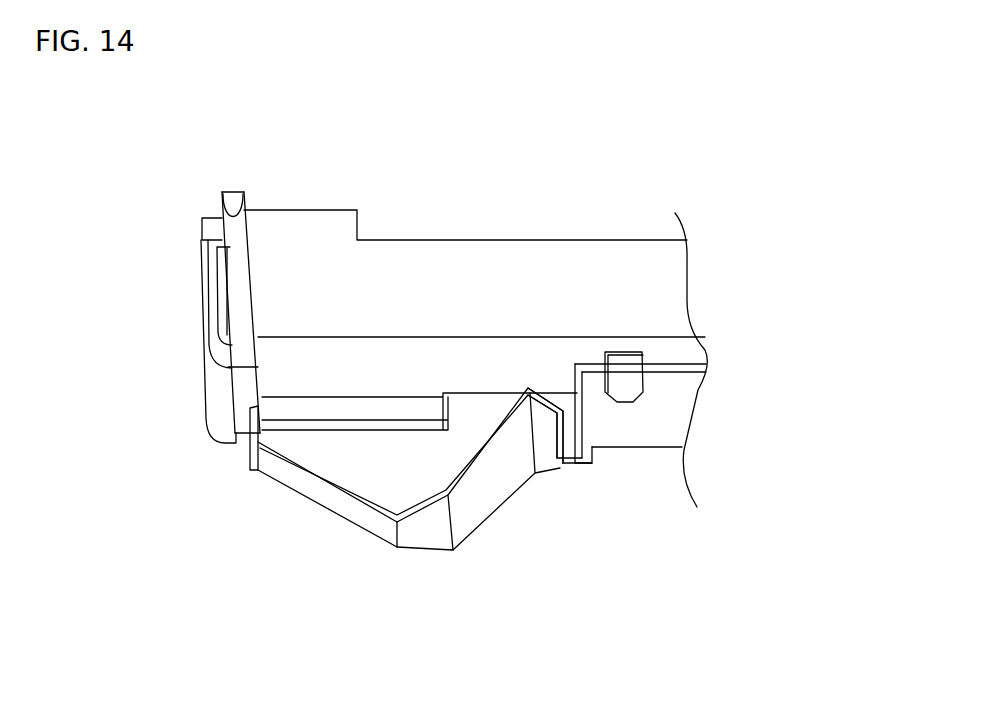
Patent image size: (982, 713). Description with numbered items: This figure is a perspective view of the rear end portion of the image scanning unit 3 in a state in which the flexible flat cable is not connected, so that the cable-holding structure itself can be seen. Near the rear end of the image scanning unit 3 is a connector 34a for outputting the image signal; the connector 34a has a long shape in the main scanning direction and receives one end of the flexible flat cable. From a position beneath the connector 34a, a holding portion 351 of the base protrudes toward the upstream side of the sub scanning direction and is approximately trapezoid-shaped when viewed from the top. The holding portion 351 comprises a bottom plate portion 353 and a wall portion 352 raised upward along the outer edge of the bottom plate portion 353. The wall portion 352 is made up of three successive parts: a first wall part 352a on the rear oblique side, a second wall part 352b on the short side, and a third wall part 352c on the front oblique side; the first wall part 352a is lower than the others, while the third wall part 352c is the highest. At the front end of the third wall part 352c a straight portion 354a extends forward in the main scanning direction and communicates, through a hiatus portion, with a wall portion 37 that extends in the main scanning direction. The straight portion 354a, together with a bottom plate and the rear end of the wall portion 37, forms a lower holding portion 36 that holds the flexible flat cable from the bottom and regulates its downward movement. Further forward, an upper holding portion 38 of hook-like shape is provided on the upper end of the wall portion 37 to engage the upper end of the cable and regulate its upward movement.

The image scanning unit 3 is at (563, 203).
The connector 34a is at (350, 407).
The holding portion 351 is at (265, 485).
The wall portion 352 is at (420, 414).
The first wall part 352a is at (363, 520).
The second wall part 352b is at (435, 518).
The third wall part 352c is at (487, 507).
The bottom plate portion 353 is at (400, 487).
The straight portion 354a is at (544, 471).
The lower holding portion 36 is at (571, 485).
The wall portion 37 is at (658, 415).
The upper holding portion 38 is at (623, 392).